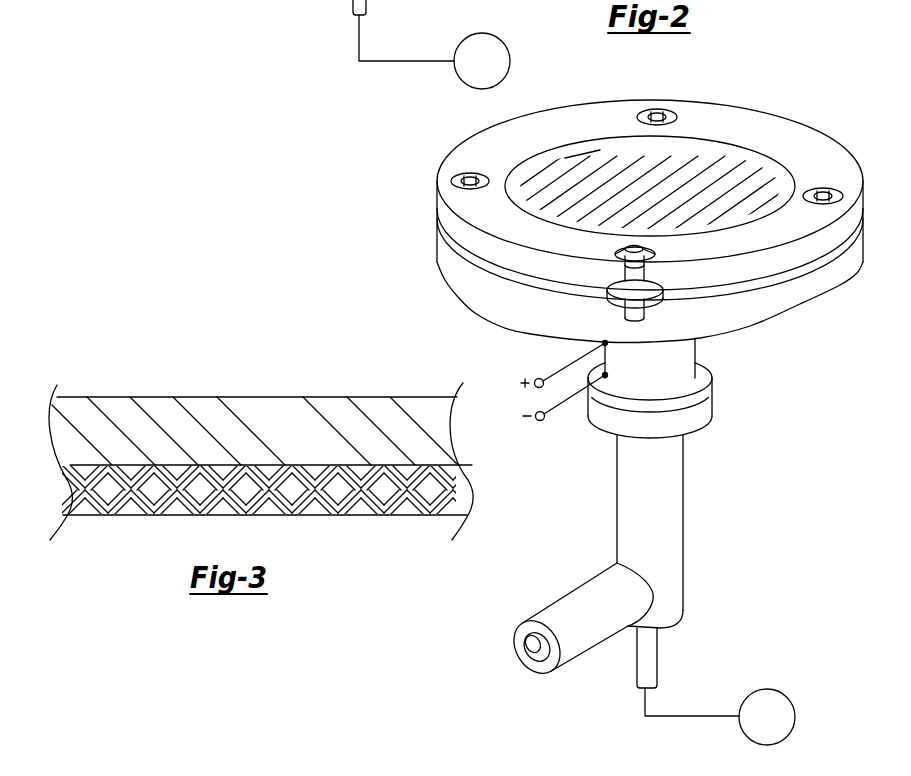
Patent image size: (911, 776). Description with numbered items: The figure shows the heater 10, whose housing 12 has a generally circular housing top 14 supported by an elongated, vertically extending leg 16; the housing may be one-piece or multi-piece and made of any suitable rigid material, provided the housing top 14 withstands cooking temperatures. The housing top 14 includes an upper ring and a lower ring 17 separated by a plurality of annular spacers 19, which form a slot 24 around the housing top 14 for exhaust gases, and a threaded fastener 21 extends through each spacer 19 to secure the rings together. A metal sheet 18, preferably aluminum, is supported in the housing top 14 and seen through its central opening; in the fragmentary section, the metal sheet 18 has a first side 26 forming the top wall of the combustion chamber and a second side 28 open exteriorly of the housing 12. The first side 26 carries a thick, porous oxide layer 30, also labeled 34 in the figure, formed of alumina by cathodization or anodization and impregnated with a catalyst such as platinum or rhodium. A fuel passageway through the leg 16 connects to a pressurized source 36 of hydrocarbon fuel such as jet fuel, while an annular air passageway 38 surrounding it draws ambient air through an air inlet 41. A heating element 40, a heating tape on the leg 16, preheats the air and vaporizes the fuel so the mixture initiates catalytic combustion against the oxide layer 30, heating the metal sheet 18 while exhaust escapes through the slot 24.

In FIG. 2, the heater 10 is at (415, 158).
In FIG. 2, the housing 12 is at (447, 252).
In FIG. 2, the housing top 14 is at (733, 107).
In FIG. 2, the leg 16 is at (672, 512).
In FIG. 2, the lower ring 17 is at (470, 292).
In FIG. 2, the metal sheet 18 is at (665, 217).
In FIG. 3, the metal sheet 18 is at (260, 427).
In FIG. 2, the annular spacers 19 is at (618, 303).
In FIG. 2, the threaded fastener 21 is at (822, 188).
In FIG. 2, the slot 24 is at (523, 293).
In FIG. 3, the first side 26 is at (170, 467).
In FIG. 2, the second side 28 is at (597, 172).
In FIG. 3, the second side 28 is at (155, 397).
In FIG. 3, the oxide layer 30 is at (313, 500).
In FIG. 3, the reinforcement layer 34 is at (269, 518).
In FIG. 2, the pressurized source 36 is at (492, 74).
In FIG. 2, the annular air passageway 38 is at (524, 644).
In FIG. 2, the heating element 40 is at (677, 362).
In FIG. 2, the air inlet 41 is at (535, 650).